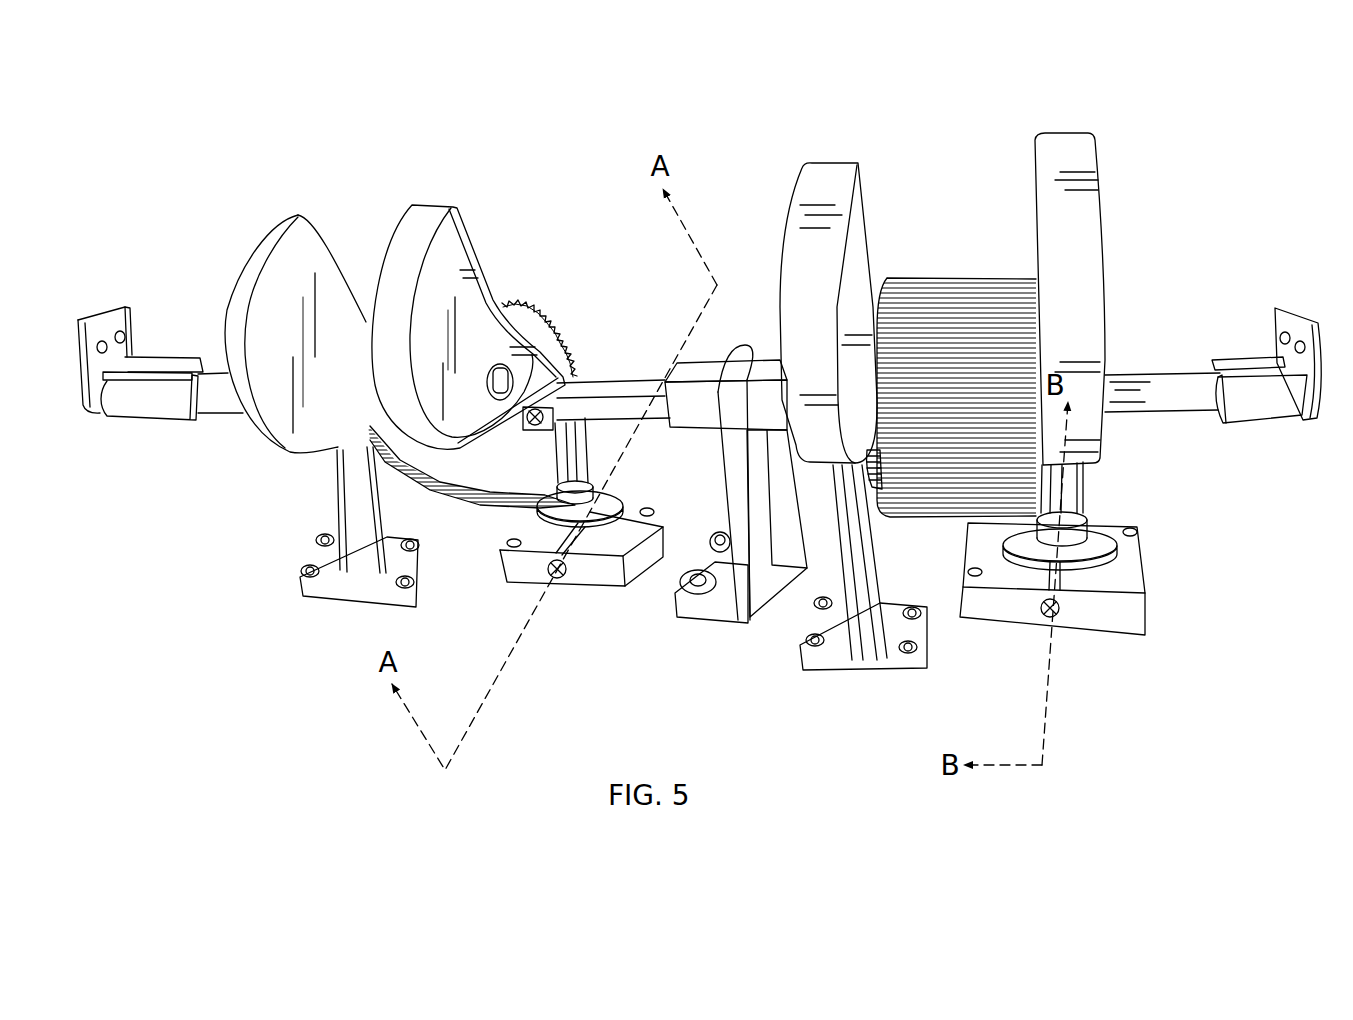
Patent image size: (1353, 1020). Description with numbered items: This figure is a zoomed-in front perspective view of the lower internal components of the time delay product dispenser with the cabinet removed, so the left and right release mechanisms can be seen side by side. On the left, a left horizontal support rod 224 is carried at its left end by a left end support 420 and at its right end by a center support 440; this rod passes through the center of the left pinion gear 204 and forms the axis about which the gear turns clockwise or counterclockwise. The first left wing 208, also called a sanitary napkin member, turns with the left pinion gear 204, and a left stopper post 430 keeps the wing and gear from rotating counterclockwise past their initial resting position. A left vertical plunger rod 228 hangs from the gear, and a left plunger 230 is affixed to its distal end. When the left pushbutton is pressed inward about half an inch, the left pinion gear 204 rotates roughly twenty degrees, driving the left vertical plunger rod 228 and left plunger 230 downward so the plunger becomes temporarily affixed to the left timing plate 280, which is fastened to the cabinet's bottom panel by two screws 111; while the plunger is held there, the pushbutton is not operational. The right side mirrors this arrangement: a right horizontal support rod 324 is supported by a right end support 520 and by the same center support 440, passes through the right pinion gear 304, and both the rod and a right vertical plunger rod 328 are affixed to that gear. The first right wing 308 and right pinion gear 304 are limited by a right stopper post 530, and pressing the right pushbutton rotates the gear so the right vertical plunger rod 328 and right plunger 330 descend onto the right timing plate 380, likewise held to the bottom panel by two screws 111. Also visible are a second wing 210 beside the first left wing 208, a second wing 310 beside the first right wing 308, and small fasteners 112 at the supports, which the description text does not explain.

The screws 111 is at (654, 512).
The fastener 112 is at (316, 541).
The left pinion gear 204 is at (527, 305).
The first left wing 208 is at (281, 213).
The second disc 210 is at (443, 204).
The left horizontal support rod 224 is at (602, 379).
The left vertical plunger rod 228 is at (595, 456).
The left plunger 230 is at (624, 497).
The left timing plate 280 is at (560, 598).
The right pinion gear 304 is at (965, 274).
The first right wing 308 is at (838, 162).
The fourth disc 310 is at (1061, 132).
The right horizontal support rod 324 is at (1160, 372).
The right vertical plunger rod 328 is at (1086, 482).
The right plunger 330 is at (1096, 520).
The right timing plate 380 is at (1062, 640).
The left end support 420 is at (112, 302).
The left stopper post 430 is at (320, 601).
The center support 440 is at (722, 626).
The right end support 520 is at (1296, 308).
The right stopper post 530 is at (858, 674).